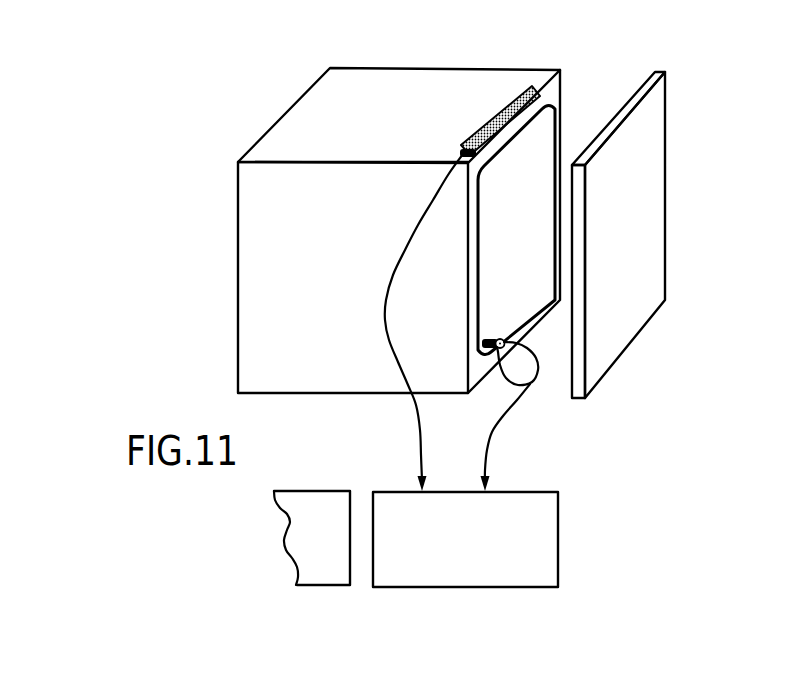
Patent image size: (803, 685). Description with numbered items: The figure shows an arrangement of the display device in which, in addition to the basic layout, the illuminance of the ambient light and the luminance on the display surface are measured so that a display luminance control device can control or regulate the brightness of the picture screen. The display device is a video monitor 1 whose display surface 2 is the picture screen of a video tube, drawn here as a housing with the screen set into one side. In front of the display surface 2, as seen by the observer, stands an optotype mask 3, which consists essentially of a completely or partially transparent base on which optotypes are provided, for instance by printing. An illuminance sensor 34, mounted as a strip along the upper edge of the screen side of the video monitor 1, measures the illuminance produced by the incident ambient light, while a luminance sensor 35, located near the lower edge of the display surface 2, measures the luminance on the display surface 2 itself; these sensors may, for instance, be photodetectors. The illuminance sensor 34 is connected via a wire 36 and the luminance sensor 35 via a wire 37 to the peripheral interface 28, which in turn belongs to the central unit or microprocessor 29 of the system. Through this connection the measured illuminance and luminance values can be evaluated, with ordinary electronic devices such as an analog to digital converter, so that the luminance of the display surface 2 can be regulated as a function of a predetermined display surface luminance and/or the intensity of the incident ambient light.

The video monitor 1 is at (396, 93).
The display surface 2 is at (541, 133).
The optotype mask 3 is at (638, 97).
The peripheral interface 28 is at (545, 543).
The central unit or microprocessor 29 is at (301, 533).
The illuminance sensor 34 is at (507, 100).
The luminance sensor 35 is at (532, 385).
The wire 36 is at (379, 295).
The wire 37 is at (490, 443).